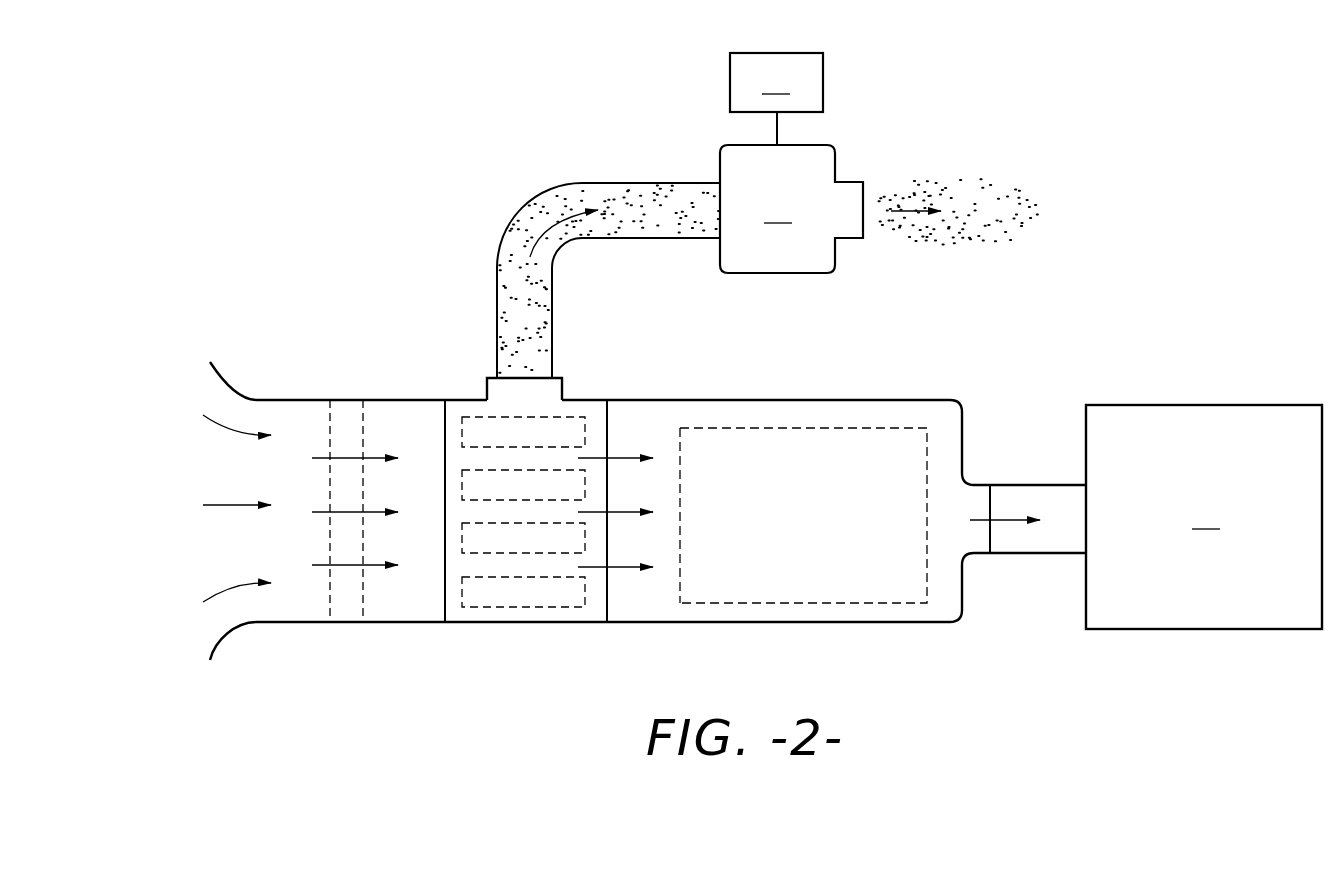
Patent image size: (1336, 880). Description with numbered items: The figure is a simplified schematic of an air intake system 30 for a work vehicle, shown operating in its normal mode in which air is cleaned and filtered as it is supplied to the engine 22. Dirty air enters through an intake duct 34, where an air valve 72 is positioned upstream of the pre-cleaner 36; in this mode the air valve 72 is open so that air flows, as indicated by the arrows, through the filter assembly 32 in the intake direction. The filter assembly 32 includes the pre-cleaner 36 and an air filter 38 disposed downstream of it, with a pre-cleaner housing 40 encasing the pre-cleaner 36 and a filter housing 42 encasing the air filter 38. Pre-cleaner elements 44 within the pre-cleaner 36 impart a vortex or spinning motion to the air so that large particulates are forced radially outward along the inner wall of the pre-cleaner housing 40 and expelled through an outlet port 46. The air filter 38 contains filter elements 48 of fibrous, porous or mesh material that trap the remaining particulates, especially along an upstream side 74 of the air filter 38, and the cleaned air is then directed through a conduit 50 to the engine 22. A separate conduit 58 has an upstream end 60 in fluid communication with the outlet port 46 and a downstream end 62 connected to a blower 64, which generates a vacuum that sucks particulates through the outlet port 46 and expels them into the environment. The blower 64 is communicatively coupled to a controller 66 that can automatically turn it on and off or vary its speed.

The engine 22 is at (1204, 517).
The air intake system 30 is at (428, 180).
The filter assembly 32 is at (699, 370).
The intake duct 34 is at (258, 398).
The pre-cleaner 36 is at (495, 611).
The air filter 38 is at (866, 612).
The pre-cleaner housing 40 is at (565, 622).
The filter housing 42 is at (733, 622).
The pre-cleaner elements 44 is at (460, 423).
The outlet port 46 is at (562, 383).
The filter elements 48 is at (826, 428).
The conduit 50 is at (1000, 486).
The conduit 58 is at (553, 183).
The upstream end 60 is at (497, 358).
The downstream end 62 is at (685, 180).
The blower 64 is at (879, 209).
The controller 66 is at (776, 99).
The air valve 72 is at (330, 417).
The upstream side 74 is at (680, 578).